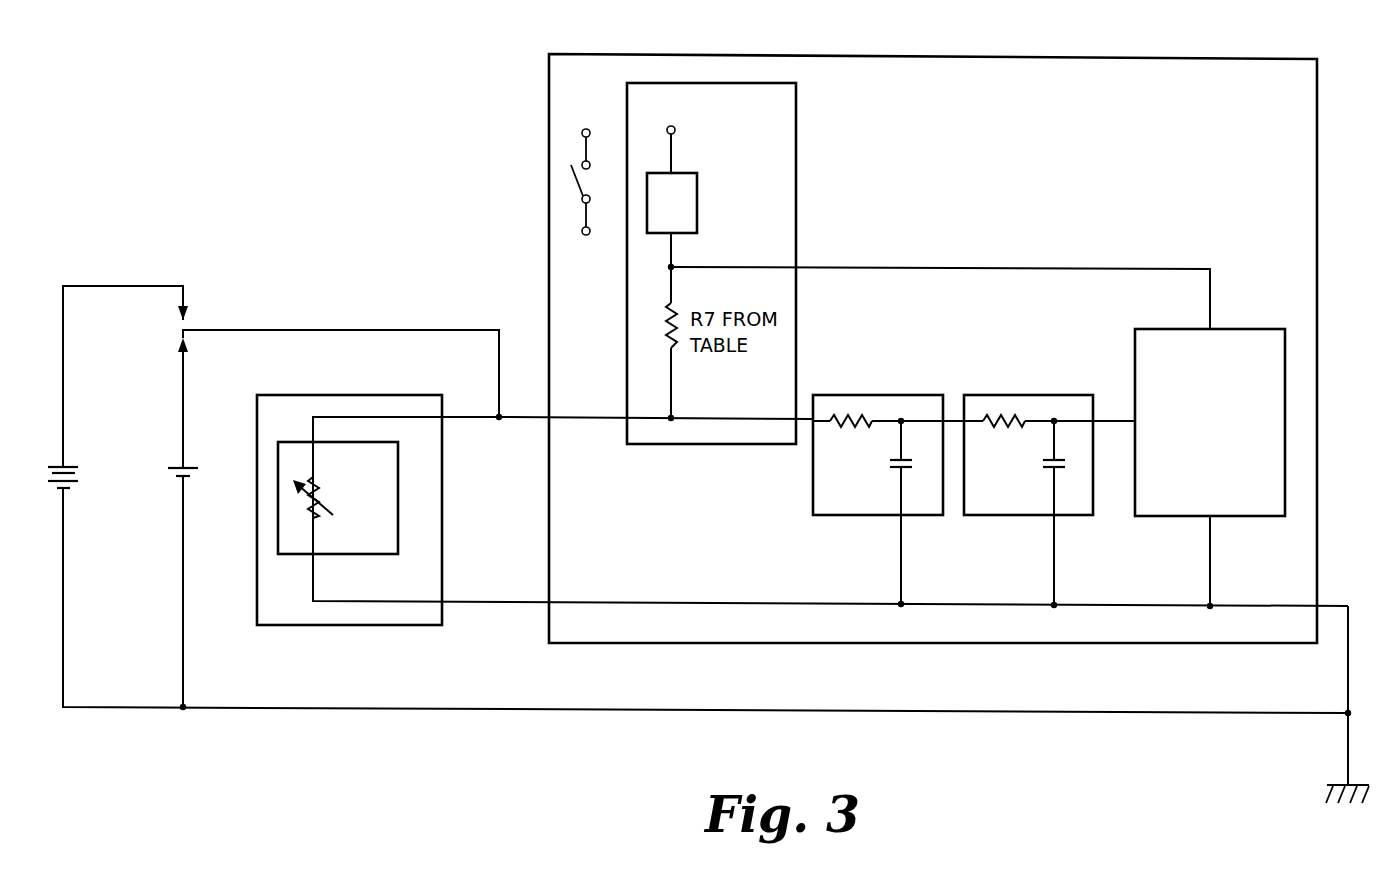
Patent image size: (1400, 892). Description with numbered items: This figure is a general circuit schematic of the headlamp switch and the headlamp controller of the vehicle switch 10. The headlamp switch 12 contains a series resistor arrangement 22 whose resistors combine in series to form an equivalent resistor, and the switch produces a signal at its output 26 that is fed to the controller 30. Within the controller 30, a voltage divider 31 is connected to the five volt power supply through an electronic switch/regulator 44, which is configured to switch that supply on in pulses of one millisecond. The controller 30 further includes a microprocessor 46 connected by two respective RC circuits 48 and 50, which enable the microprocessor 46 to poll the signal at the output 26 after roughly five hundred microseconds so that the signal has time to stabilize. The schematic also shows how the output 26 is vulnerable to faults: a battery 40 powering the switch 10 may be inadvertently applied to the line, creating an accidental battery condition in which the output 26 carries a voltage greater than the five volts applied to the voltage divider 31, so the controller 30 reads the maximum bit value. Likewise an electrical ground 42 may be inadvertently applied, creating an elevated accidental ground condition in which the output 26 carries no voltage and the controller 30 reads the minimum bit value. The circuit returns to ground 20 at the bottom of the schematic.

The vehicle switch 10 is at (400, 278).
The headlamp switch 12 is at (384, 627).
The ground 20 is at (1347, 734).
The series resistor arrangement 22 is at (350, 556).
The output 26 is at (520, 421).
The controller 30 is at (1087, 57).
The voltage divider 31 is at (626, 290).
The battery 40 is at (66, 459).
The electrical ground 42 is at (186, 459).
The electronic switch/regulator 44 is at (689, 203).
The microprocessor 46 is at (1252, 328).
The RC circuit 48 is at (1012, 517).
The RC circuit 50 is at (860, 517).